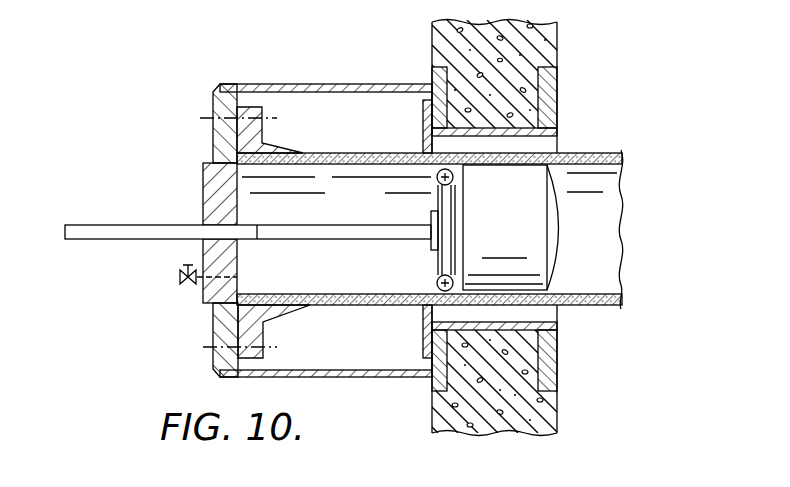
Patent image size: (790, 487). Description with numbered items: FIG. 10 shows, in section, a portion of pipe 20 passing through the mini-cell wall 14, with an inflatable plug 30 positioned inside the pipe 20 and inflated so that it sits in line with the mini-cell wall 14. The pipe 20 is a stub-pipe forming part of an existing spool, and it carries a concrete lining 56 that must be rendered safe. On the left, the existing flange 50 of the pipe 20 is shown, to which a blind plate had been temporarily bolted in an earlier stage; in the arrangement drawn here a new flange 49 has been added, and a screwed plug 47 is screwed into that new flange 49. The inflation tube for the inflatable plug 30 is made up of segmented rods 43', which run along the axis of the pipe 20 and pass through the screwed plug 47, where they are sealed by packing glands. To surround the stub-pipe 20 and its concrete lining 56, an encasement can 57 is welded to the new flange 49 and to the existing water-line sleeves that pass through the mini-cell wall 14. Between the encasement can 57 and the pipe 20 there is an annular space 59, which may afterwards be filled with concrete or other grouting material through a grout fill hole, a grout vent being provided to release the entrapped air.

The mini-cell wall 14 is at (443, 41).
The pipe 20 is at (588, 152).
The inflatable plug 30 is at (513, 225).
The segmented rods 43' is at (251, 237).
The screwed plug 47 is at (218, 190).
The new flange 49 is at (220, 105).
The flange 50 is at (261, 336).
The concrete lining 56 is at (259, 297).
The encasement can 57 is at (373, 86).
The annular space 59 is at (392, 133).